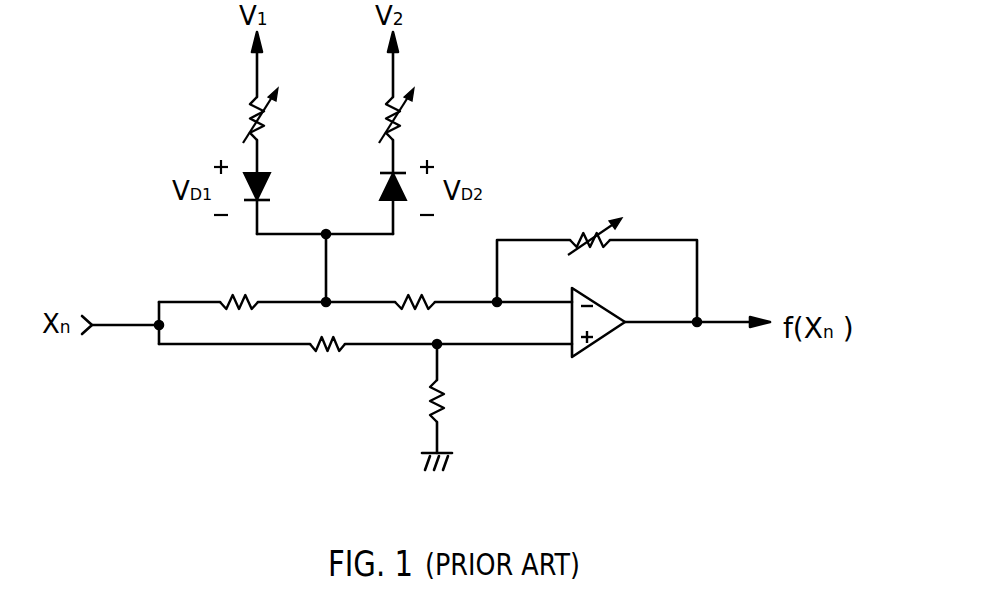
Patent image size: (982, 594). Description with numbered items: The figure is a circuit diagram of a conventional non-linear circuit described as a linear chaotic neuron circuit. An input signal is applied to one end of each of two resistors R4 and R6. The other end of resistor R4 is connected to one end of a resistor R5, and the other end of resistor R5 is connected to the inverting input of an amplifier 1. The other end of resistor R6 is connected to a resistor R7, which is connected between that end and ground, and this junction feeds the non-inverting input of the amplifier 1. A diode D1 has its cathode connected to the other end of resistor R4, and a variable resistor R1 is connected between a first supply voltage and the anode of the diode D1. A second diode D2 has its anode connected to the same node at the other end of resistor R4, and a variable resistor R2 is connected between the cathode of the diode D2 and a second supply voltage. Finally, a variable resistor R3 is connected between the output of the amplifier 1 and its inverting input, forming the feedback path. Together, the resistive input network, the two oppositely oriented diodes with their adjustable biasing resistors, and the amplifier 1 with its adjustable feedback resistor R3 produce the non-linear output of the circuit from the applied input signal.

The amplifier 1 is at (603, 343).
The variable resistor R1 is at (244, 115).
The variable resistor R2 is at (412, 115).
The variable resistor R3 is at (595, 225).
The resistor R4 is at (238, 286).
The resistor R5 is at (415, 285).
The resistor R6 is at (327, 367).
The resistor R7 is at (457, 401).
The diode D1 is at (277, 189).
The diode D2 is at (376, 189).